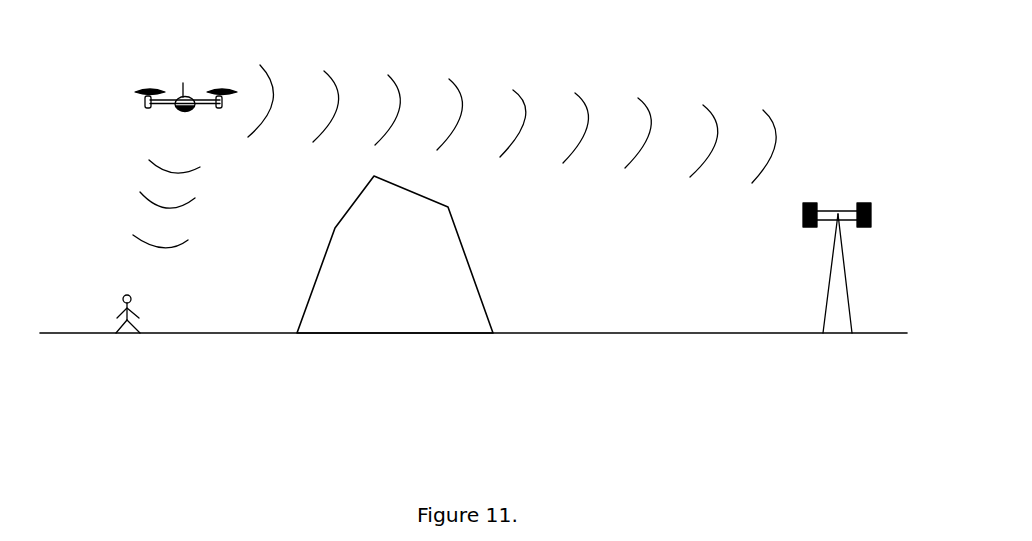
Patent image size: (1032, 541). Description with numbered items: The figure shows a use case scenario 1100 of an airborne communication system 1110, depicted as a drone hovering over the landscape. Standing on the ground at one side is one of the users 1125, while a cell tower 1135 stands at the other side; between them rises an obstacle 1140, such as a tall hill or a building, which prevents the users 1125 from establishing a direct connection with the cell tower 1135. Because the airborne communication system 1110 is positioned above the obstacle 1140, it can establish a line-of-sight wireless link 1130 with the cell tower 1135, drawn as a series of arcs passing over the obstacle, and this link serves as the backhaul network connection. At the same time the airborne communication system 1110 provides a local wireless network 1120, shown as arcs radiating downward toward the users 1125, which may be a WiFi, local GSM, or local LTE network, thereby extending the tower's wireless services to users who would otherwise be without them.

The use case scenario 1100 is at (473, 403).
The airborne communication system 1110 is at (180, 98).
The local wireless network 1120 is at (150, 161).
The users 1125 is at (125, 342).
The wireless link 1130 is at (508, 102).
The cell tower 1135 is at (840, 213).
The obstacle 1140 is at (395, 254).